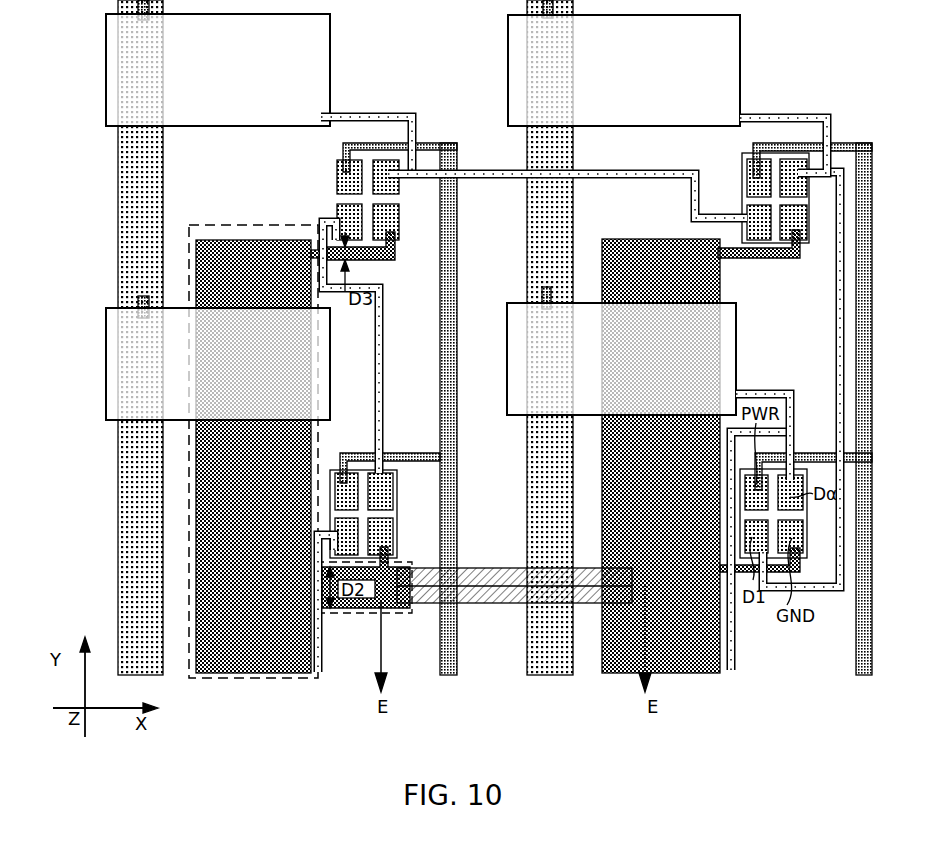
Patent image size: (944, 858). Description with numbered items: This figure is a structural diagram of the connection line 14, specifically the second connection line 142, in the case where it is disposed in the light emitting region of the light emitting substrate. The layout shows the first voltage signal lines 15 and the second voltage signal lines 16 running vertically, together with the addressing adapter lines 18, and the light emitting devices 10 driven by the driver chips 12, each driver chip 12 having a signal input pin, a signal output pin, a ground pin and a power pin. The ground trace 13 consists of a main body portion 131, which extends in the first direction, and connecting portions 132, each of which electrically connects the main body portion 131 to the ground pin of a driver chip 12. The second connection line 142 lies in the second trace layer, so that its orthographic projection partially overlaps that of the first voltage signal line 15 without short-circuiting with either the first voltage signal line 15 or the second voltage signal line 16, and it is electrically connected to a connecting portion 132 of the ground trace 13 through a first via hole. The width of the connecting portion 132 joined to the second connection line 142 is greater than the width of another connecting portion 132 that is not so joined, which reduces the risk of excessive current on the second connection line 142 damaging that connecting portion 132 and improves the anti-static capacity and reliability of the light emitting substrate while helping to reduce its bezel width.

The light emitting device 10 is at (175, 412).
The driver chip 12 is at (330, 498).
The ground trace 13 is at (350, 728).
The main body portion 131 is at (242, 678).
The connecting portion 132 is at (382, 260).
The connection line 14 is at (497, 603).
The second connection line 142 is at (514, 643).
The first voltage signal line 15 is at (138, 542).
The second voltage signal line 16 is at (440, 638).
The addressing adapter line 18 is at (385, 368).